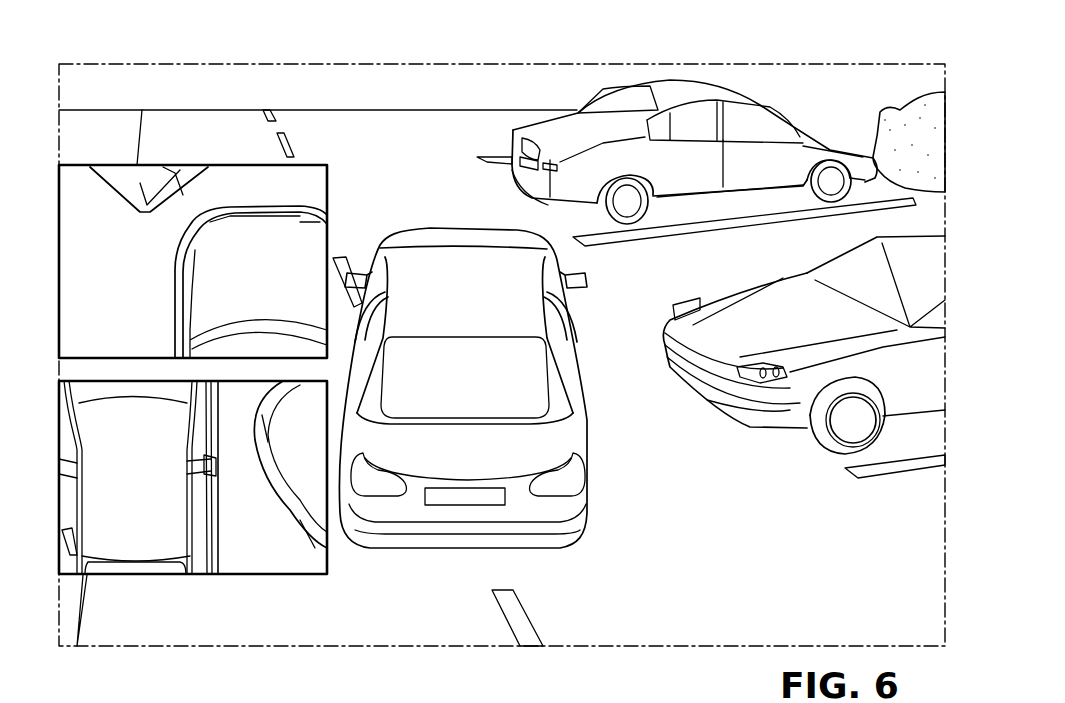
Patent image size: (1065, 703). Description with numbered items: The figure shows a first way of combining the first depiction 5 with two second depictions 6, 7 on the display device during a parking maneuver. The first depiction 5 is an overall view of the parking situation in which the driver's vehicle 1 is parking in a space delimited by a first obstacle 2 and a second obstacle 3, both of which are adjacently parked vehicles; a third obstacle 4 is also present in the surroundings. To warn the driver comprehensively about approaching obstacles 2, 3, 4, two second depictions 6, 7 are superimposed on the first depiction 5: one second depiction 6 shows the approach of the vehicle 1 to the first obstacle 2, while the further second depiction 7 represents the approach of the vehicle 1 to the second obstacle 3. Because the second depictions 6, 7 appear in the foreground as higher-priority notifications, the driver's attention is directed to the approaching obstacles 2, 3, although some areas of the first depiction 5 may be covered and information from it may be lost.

The vehicle 1 is at (583, 430).
The first obstacle 2 is at (618, 92).
The second obstacle 3 is at (768, 287).
The third obstacle 4 is at (915, 125).
The first depiction 5 is at (697, 64).
The second depiction 6 is at (234, 165).
The further second depiction 7 is at (250, 575).